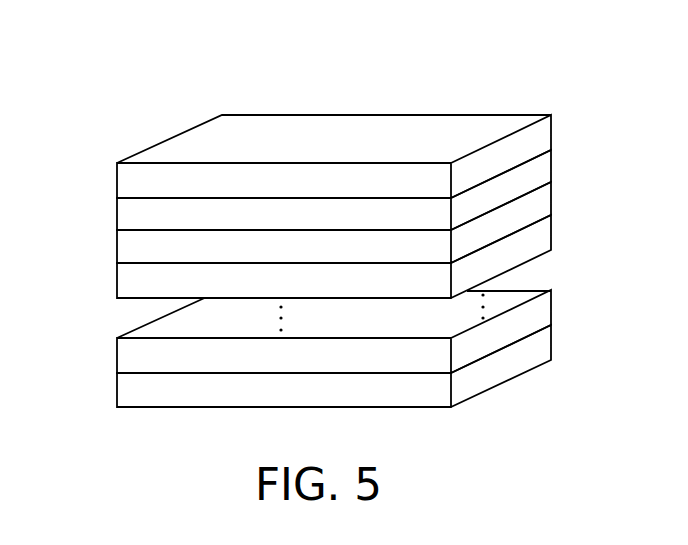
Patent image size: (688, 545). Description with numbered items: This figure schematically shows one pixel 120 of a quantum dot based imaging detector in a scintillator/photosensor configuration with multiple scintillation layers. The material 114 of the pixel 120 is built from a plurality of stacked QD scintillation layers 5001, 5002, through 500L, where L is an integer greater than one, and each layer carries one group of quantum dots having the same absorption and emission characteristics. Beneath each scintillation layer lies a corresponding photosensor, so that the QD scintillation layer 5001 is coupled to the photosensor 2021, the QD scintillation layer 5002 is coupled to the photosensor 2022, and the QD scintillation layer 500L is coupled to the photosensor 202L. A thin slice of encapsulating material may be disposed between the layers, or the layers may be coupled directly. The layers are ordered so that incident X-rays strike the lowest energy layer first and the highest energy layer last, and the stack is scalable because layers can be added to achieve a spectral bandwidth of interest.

The material 114 is at (148, 132).
The pixel 120 is at (566, 92).
The QD scintillation layer 5001 is at (117, 183).
The QD scintillation layer 5002 is at (117, 248).
The QD scintillation layer 500L is at (117, 358).
The photosensor 2021 is at (552, 167).
The photosensor 2022 is at (552, 230).
The photosensor 202L is at (552, 345).